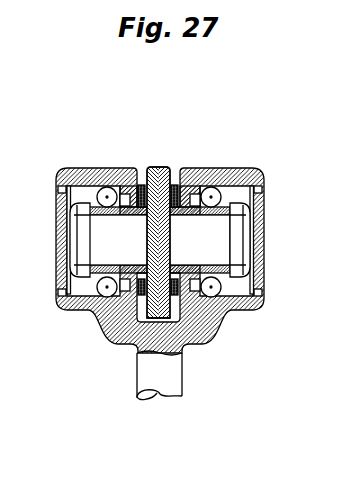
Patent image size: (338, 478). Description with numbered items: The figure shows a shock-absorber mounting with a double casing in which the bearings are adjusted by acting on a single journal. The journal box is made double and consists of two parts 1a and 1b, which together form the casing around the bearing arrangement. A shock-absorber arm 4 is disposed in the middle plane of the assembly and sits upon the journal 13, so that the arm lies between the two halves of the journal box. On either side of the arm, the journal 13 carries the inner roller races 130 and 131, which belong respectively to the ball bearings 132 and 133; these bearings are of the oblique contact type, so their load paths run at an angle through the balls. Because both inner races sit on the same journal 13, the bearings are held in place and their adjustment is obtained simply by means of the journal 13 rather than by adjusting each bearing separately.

The journal 13 is at (67, 318).
The ball bearing 133 is at (92, 168).
The ball bearing 132 is at (228, 167).
The inner roller race 130 is at (262, 238).
The inner roller race 131 is at (70, 227).
The journal box part 1b is at (121, 167).
The journal box part 1a is at (192, 167).
The shock-absorber arm 4 is at (167, 167).